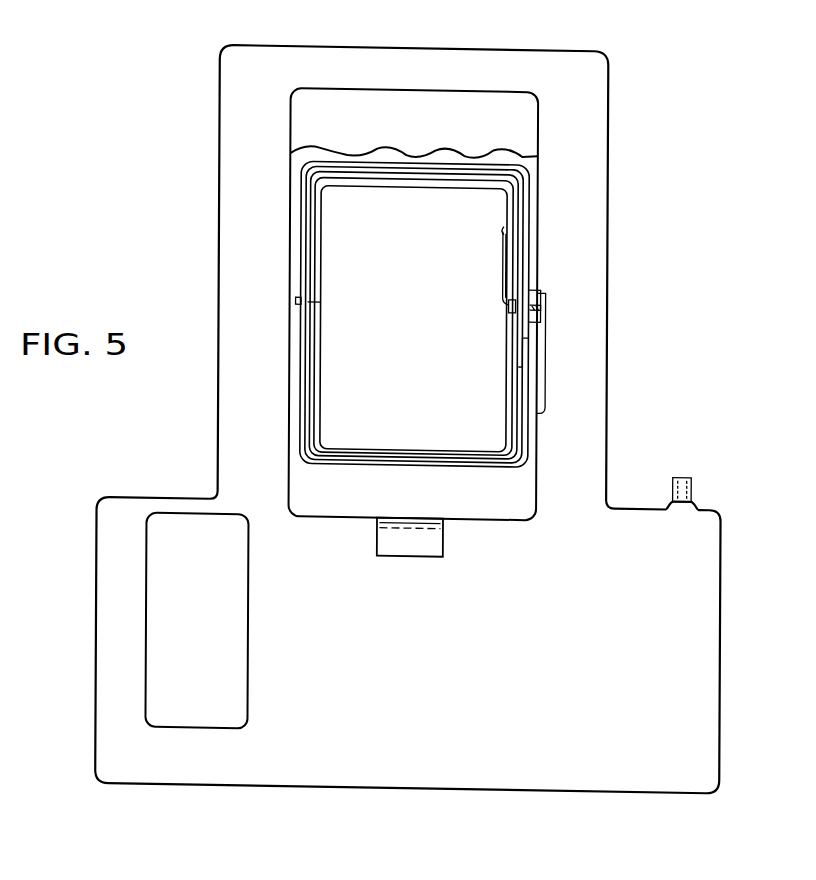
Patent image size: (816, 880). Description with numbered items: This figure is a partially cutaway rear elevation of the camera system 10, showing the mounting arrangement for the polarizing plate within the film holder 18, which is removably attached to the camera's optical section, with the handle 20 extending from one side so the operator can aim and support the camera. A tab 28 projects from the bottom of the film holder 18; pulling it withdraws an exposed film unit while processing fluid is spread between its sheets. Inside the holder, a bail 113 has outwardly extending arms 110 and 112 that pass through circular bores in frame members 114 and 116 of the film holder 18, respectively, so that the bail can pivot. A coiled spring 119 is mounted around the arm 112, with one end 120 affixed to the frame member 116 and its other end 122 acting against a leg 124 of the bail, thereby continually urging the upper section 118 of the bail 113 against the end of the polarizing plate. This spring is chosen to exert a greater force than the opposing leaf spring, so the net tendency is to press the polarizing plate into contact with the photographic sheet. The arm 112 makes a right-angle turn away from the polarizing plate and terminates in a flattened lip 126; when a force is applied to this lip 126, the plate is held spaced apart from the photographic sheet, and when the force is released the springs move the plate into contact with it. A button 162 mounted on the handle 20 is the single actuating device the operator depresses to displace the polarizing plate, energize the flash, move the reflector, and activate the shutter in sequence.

The camera system 10 is at (434, 418).
The film holder 18 is at (526, 128).
The handle 20 is at (723, 592).
The tab 28 is at (414, 556).
The outwardly extending arm 110 is at (318, 304).
The outwardly extending arm 112 is at (539, 291).
The bail 113 is at (512, 203).
The frame member 114 is at (310, 342).
The frame member 116 is at (525, 371).
The upper section of the bail 118 is at (469, 184).
The coiled spring 119 is at (512, 310).
The end of coiled spring 120 is at (522, 336).
The other end of coiled spring 122 is at (501, 255).
The leg of the bail 124 is at (502, 228).
The flattened lip 126 is at (540, 306).
The button 162 is at (693, 485).